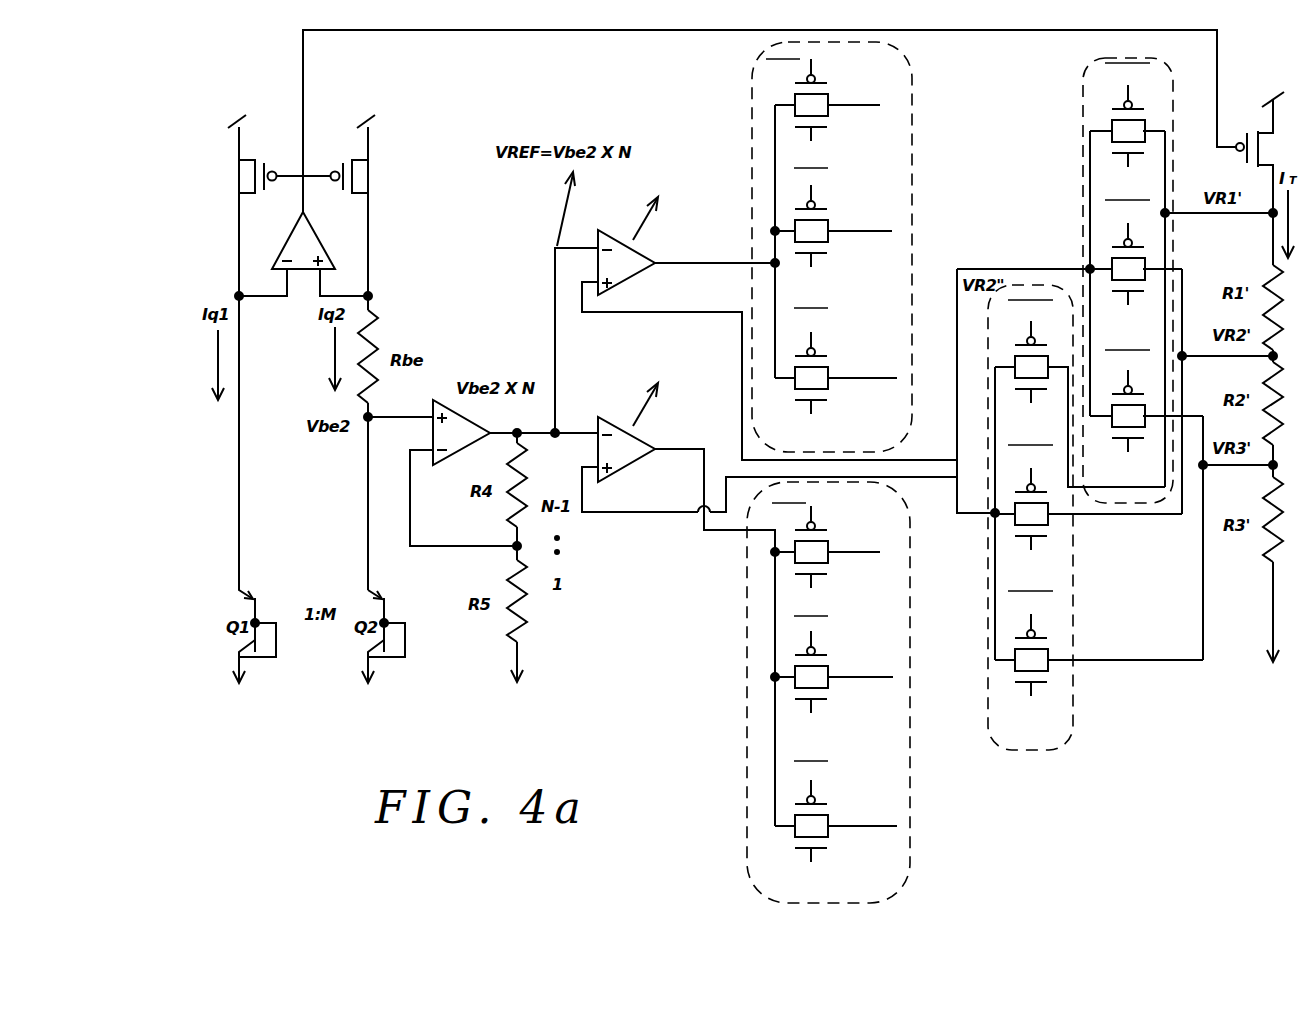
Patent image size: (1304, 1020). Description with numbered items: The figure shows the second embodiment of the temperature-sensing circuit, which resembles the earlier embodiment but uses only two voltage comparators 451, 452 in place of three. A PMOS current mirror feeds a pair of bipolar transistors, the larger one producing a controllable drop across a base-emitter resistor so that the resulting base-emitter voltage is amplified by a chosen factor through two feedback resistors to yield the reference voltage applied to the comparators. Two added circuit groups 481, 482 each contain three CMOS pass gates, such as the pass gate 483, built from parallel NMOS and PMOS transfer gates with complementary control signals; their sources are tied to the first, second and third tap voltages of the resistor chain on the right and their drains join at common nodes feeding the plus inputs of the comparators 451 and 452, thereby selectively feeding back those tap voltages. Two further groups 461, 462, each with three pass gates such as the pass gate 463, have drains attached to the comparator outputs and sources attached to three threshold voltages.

The voltage comparator A2' 451 is at (611, 250).
The voltage comparator A1' 452 is at (611, 436).
The circuit group of CMOS pass gates 461 is at (909, 840).
The circuit group of CMOS pass gates 462 is at (860, 247).
The pass gate 463 is at (827, 94).
The circuit group of CMOS pass gates 481 is at (1119, 280).
The circuit group of CMOS pass gates 482 is at (989, 700).
The pass gate 483 is at (1143, 121).